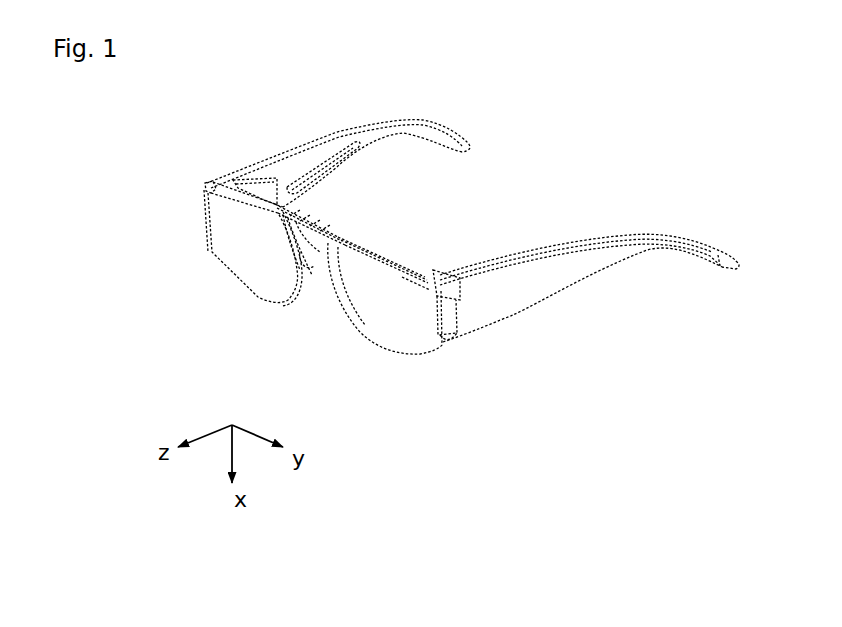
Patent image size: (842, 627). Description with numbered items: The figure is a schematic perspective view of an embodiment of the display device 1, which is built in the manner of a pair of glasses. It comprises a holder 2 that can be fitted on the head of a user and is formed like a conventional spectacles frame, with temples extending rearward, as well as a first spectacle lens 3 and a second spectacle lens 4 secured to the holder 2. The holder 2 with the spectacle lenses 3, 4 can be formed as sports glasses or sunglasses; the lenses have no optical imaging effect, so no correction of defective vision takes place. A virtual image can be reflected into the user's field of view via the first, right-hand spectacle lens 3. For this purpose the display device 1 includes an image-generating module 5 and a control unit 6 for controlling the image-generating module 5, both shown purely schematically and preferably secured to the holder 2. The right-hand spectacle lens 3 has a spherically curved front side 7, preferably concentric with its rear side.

The display device 1 is at (448, 226).
The holder 2 is at (367, 126).
The first spectacle lens 3 is at (257, 298).
The second spectacle lens 4 is at (363, 347).
The image-generating module 5 is at (251, 155).
The control unit 6 is at (263, 180).
The front side 7 is at (238, 260).